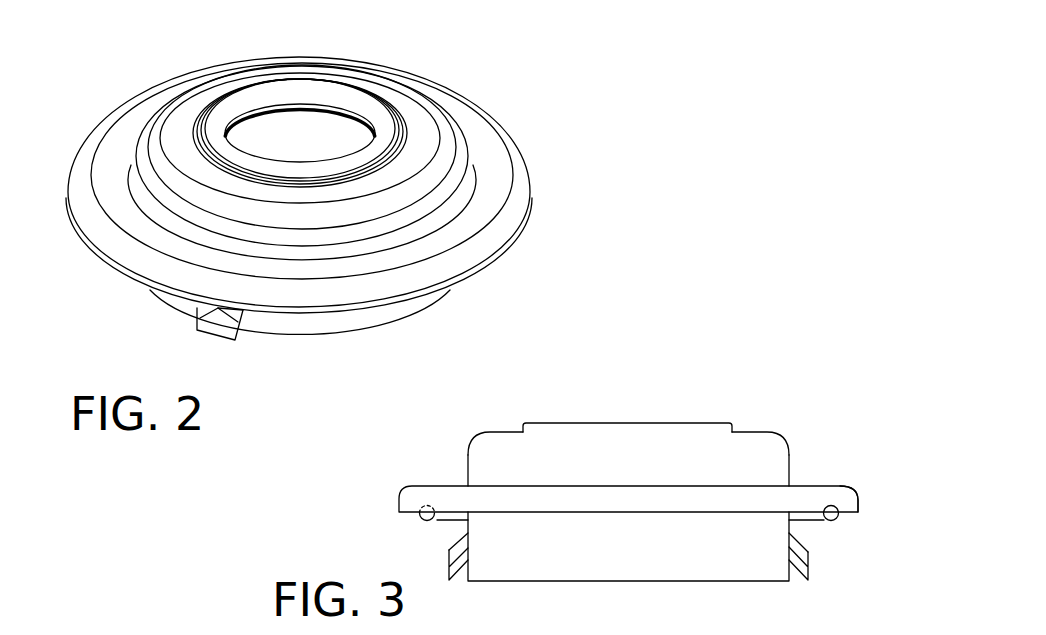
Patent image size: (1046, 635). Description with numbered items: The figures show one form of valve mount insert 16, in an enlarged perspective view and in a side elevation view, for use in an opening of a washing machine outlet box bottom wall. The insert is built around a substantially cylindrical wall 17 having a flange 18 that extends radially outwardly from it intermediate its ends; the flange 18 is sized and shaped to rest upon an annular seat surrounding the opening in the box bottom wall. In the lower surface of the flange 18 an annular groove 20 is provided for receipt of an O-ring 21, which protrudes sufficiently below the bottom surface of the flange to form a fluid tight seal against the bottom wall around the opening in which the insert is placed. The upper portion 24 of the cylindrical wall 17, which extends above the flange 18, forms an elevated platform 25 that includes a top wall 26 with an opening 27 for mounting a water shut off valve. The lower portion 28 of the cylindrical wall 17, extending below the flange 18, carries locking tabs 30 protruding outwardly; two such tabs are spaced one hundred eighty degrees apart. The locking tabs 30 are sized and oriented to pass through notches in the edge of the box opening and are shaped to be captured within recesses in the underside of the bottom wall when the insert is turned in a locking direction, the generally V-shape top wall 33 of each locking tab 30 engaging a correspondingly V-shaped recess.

In FIG. 2, the valve mount insert 16 is at (192, 48).
In FIG. 3, the valve mount insert 16 is at (447, 443).
In FIG. 2, the cylindrical wall 17 is at (453, 185).
In FIG. 3, the cylindrical wall 17 is at (790, 460).
In FIG. 2, the flange 18 is at (505, 208).
In FIG. 3, the flange 18 is at (812, 490).
In FIG. 3, the annular groove 20 is at (835, 505).
In FIG. 3, the O-ring 21 is at (832, 521).
In FIG. 2, the upper portion 24 is at (147, 180).
In FIG. 3, the upper portion 24 is at (468, 462).
In FIG. 2, the elevated platform 25 is at (172, 98).
In FIG. 3, the elevated platform 25 is at (490, 434).
In FIG. 2, the top wall 26 is at (413, 103).
In FIG. 3, the top wall 26 is at (702, 423).
In FIG. 2, the opening 27 is at (327, 107).
In FIG. 2, the lower portion 28 is at (412, 305).
In FIG. 3, the lower portion 28 is at (541, 560).
In FIG. 2, the locking tabs 30 is at (210, 325).
In FIG. 3, the locking tabs 30 is at (451, 556).
In FIG. 2, the V-shape top wall 33 is at (237, 313).
In FIG. 3, the V-shape top wall 33 is at (458, 543).